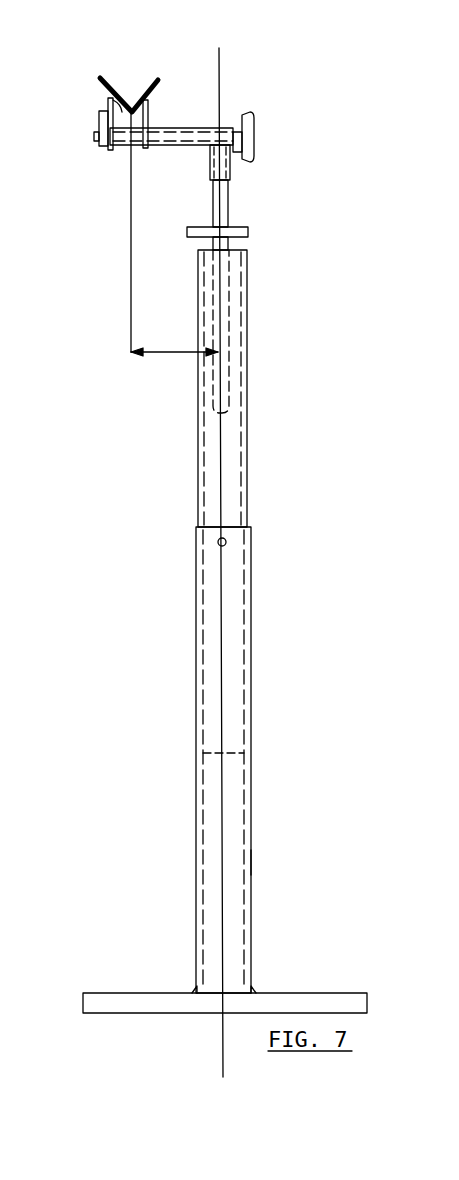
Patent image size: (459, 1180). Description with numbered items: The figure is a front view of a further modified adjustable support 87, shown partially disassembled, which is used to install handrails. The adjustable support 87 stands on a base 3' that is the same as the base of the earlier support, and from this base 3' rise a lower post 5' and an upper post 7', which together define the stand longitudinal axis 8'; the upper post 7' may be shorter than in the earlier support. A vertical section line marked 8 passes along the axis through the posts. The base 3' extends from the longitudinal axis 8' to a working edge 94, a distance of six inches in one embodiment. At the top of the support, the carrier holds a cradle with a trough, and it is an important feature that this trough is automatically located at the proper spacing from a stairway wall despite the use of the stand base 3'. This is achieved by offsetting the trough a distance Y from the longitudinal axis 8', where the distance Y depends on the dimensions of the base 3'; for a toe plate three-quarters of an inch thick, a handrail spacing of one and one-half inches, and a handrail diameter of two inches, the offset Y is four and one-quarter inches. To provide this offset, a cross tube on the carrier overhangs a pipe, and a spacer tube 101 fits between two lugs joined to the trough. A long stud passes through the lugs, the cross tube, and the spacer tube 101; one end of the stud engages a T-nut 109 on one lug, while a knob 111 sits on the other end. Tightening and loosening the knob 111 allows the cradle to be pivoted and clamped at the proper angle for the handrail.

The section line 8- 8 is at (210, 571).
The offset distance Y is at (174, 234).
The spacer tube 101 is at (107, 97).
The T-nut 109 is at (102, 150).
The knob 111 is at (250, 138).
The longitudinal axis 8' is at (261, 388).
The upper post 7' is at (266, 331).
The lower post 5' is at (257, 760).
The adjustable support 87 is at (262, 860).
The working edge 94 is at (83, 999).
The base 3' is at (263, 975).